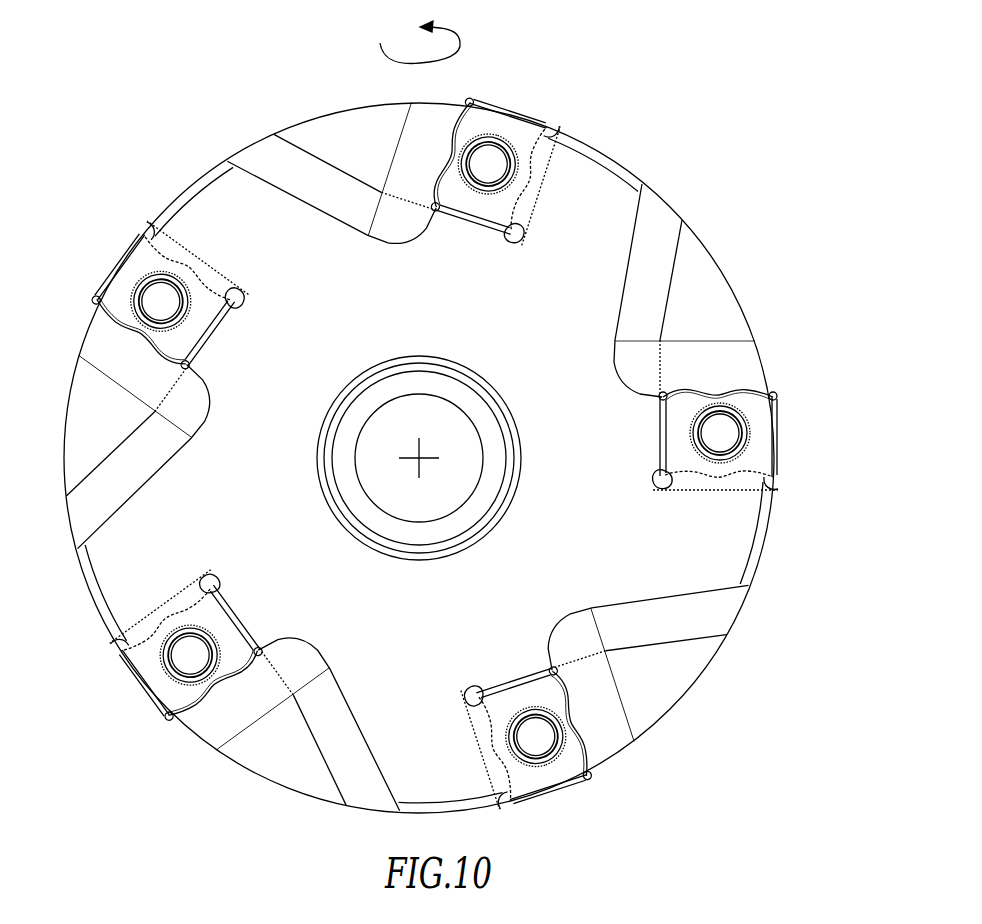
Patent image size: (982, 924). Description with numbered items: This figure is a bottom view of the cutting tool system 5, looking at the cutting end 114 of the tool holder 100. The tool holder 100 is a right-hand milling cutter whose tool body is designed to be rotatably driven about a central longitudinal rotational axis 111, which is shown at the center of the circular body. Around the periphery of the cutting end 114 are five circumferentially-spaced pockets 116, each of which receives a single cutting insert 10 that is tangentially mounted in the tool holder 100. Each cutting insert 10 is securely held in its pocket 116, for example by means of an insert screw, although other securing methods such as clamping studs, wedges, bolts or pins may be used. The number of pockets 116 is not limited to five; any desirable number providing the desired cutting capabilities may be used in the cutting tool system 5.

The cutting tool system 5 is at (172, 52).
The cutting insert 10 is at (516, 101).
The tool holder 100 is at (772, 560).
The central longitudinal rotational axis 111 is at (423, 456).
The cutting end 114 is at (606, 193).
The pocket 116 is at (548, 197).